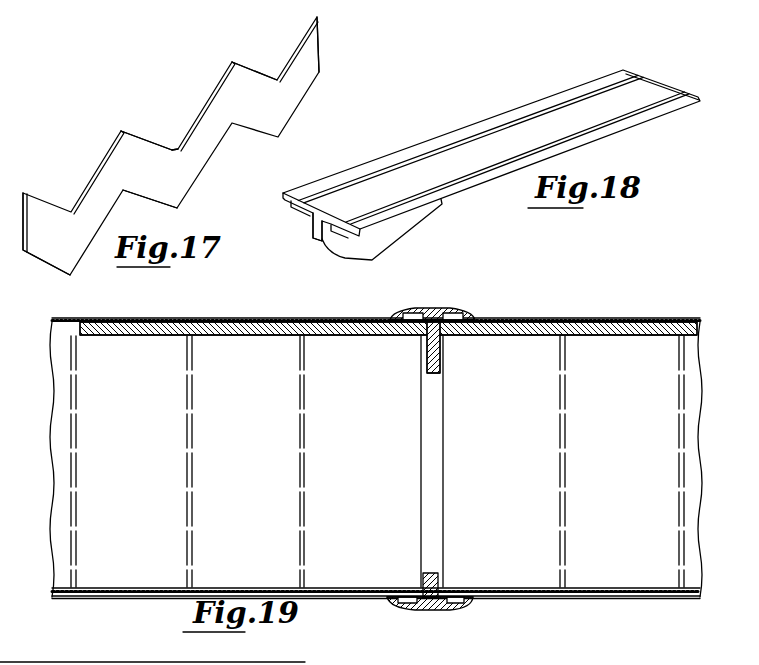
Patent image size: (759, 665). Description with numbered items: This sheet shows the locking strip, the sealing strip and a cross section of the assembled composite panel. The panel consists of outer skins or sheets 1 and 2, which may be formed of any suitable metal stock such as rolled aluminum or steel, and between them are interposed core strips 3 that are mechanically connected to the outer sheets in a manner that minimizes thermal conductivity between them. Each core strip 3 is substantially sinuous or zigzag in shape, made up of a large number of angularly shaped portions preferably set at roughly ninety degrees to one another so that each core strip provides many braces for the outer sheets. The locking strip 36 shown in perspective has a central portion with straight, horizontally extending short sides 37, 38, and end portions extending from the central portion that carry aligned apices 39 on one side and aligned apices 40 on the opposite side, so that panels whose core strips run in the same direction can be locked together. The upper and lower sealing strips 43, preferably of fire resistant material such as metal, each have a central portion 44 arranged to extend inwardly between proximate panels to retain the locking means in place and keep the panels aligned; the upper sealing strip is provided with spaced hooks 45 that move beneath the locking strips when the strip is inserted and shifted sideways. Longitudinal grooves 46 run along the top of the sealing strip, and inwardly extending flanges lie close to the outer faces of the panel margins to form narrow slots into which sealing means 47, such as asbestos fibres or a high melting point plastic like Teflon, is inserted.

In FIG. 19, the outer skin or sheet 1 is at (220, 317).
In FIG. 19, the outer skin or sheet 2 is at (110, 599).
In FIG. 19, the core strip 3 is at (236, 491).
In FIG. 17, the zigzag spacer bracket 36 is at (98, 153).
In FIG. 19, the zigzag spacer bracket 36 is at (250, 336).
In FIG. 17, the web of bracket 37 is at (171, 143).
In FIG. 17, the lower web of bracket 38 is at (176, 209).
In FIG. 17, the apices 39 is at (118, 128).
In FIG. 17, the apices 40 is at (278, 139).
In FIG. 18, the sealing strip 43 is at (495, 127).
In FIG. 19, the sealing strip 43 is at (435, 306).
In FIG. 18, the central portion 44 is at (322, 232).
In FIG. 19, the central portion 44 is at (437, 573).
In FIG. 18, the hook 45 is at (420, 223).
In FIG. 19, the hook 45 is at (440, 357).
In FIG. 18, the longitudinal groove 46 is at (413, 148).
In FIG. 19, the longitudinal groove 46 is at (392, 312).
In FIG. 18, the sealing means 47 is at (302, 207).
In FIG. 19, the sealing means 47 is at (415, 312).